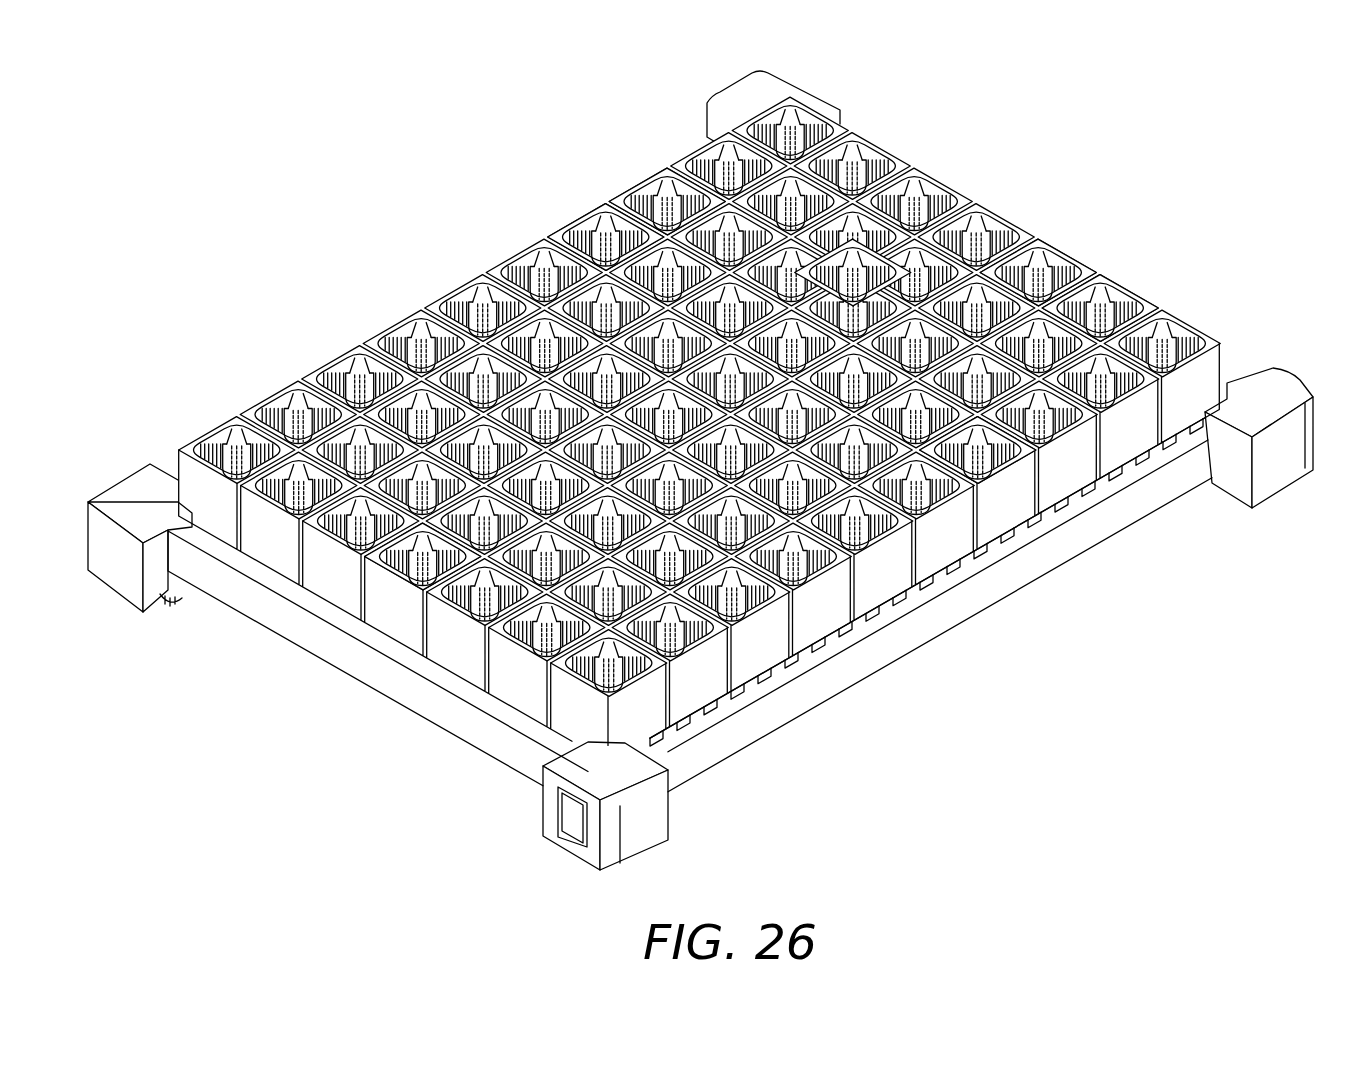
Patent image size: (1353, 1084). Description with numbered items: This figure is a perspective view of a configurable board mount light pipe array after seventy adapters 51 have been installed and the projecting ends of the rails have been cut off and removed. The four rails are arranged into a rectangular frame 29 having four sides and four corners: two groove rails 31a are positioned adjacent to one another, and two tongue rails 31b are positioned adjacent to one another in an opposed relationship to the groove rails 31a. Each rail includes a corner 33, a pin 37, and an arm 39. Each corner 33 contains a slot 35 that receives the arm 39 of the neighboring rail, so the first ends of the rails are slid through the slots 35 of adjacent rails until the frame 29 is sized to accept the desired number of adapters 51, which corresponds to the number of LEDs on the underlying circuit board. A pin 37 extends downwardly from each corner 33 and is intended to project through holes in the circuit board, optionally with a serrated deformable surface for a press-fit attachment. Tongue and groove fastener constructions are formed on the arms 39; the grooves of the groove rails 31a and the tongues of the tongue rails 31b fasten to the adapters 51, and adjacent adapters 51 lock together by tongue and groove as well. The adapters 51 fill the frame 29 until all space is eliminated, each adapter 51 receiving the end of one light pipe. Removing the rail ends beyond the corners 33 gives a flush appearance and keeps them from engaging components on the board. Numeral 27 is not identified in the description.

The cup 27 is at (770, 243).
The frame 29 is at (700, 454).
The groove rail 31a is at (920, 688).
The tongue rail 31b is at (461, 258).
The corner 33 is at (822, 112).
The slot 35 is at (556, 792).
The pin 37 is at (172, 616).
The arm 39 is at (690, 503).
The adapter 51 is at (640, 180).